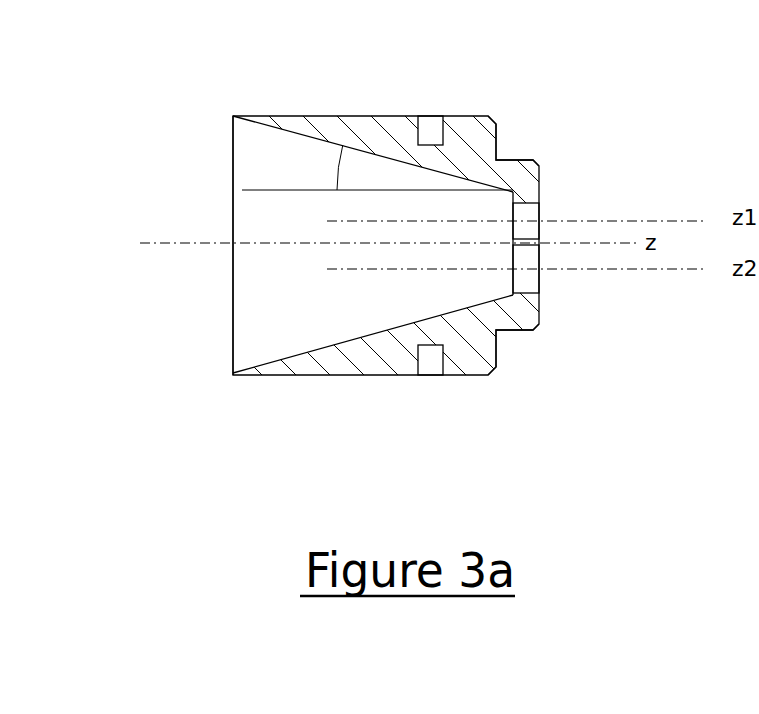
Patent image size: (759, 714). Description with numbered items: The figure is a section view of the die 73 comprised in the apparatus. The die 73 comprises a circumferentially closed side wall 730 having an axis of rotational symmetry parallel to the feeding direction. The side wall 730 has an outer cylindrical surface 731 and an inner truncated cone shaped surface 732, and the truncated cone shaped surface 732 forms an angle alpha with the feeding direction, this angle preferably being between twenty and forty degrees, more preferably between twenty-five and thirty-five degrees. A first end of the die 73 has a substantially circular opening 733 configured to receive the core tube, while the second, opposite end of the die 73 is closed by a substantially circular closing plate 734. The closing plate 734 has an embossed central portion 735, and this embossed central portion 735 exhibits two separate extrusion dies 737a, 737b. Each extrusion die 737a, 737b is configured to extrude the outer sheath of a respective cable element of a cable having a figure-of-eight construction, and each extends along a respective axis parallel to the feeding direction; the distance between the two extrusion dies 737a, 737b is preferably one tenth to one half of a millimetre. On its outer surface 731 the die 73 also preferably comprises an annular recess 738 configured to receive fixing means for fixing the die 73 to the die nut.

The die 73 is at (229, 95).
The side wall 730 is at (373, 130).
The outer cylindrical surface 731 is at (457, 117).
The inner truncated cone shaped surface 732 is at (360, 335).
The circular opening 733 is at (238, 228).
The closing plate 734 is at (496, 133).
The embossed central portion 735 is at (538, 317).
The extrusion die 737a is at (532, 214).
The extrusion die 737b is at (535, 276).
The annular recess 738 is at (327, 163).